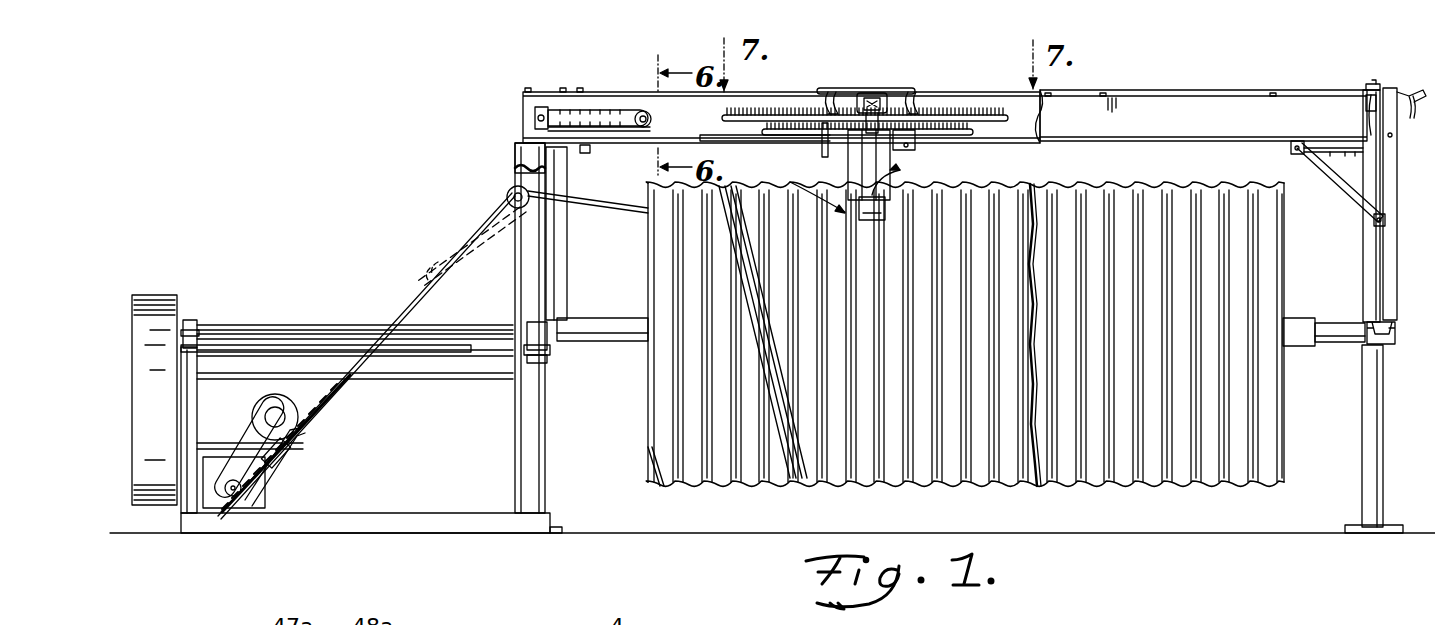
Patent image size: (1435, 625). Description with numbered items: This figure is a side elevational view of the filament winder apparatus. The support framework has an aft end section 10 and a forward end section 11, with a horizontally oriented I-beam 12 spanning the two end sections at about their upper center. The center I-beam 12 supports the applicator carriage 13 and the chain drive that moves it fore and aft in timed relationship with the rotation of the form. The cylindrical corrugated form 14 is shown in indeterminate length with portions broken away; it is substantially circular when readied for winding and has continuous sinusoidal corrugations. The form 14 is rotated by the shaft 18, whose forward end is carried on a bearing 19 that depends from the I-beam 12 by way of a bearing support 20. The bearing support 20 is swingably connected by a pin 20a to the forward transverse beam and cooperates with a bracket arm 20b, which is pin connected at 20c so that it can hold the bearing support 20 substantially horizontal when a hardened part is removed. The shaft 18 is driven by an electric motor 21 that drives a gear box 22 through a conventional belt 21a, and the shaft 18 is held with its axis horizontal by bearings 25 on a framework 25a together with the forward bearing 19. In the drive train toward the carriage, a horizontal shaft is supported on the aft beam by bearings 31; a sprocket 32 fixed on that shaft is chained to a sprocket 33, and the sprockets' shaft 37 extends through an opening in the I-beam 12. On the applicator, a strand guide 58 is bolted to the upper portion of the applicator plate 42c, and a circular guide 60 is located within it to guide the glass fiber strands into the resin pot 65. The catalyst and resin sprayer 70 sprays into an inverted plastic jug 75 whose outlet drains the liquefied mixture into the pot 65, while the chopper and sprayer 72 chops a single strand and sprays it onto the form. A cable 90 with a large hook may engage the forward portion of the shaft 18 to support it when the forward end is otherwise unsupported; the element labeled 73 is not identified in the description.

The aft end section 10 is at (520, 168).
The forward end section 11 is at (1362, 397).
The I-beam 12 is at (1153, 98).
The applicator carriage 13 is at (913, 88).
The cylindrical corrugated form 14 is at (1116, 480).
The shaft 18 is at (624, 324).
The bearing 19 is at (278, 464).
The bearing support 20 is at (1390, 246).
The pin 20a is at (1371, 110).
The bracket arm 20b is at (1410, 92).
The pin connection 20c is at (1374, 86).
The electric motor 21 is at (287, 402).
The belt 21a is at (255, 435).
The gear box 22 is at (265, 491).
The bearings 25 is at (196, 317).
The framework 25a is at (197, 393).
The bearings 31 is at (534, 114).
The sprocket 32 is at (632, 96).
The sprocket 33 is at (636, 156).
The sprockets' shaft 37 is at (650, 120).
The applicator plate 42c is at (846, 86).
The strand guide 58 is at (1038, 122).
The circular guide 60 is at (958, 150).
The resin pot 65 is at (848, 172).
The catalyst and resin sprayer 70 is at (880, 93).
The chopper and sprayer 72 is at (792, 182).
The lead wire 73 is at (904, 170).
The inverted plastic jug 75 is at (862, 92).
The cable 90 is at (401, 307).